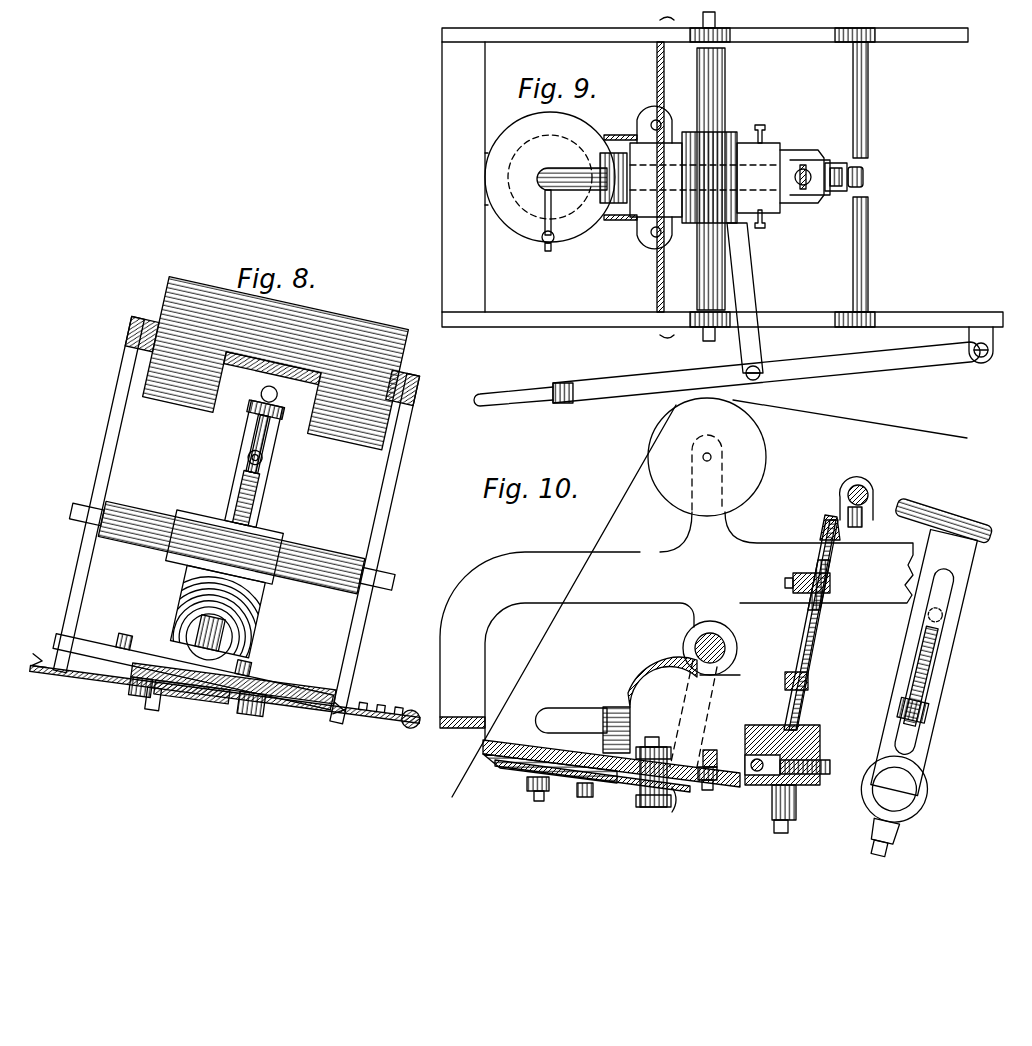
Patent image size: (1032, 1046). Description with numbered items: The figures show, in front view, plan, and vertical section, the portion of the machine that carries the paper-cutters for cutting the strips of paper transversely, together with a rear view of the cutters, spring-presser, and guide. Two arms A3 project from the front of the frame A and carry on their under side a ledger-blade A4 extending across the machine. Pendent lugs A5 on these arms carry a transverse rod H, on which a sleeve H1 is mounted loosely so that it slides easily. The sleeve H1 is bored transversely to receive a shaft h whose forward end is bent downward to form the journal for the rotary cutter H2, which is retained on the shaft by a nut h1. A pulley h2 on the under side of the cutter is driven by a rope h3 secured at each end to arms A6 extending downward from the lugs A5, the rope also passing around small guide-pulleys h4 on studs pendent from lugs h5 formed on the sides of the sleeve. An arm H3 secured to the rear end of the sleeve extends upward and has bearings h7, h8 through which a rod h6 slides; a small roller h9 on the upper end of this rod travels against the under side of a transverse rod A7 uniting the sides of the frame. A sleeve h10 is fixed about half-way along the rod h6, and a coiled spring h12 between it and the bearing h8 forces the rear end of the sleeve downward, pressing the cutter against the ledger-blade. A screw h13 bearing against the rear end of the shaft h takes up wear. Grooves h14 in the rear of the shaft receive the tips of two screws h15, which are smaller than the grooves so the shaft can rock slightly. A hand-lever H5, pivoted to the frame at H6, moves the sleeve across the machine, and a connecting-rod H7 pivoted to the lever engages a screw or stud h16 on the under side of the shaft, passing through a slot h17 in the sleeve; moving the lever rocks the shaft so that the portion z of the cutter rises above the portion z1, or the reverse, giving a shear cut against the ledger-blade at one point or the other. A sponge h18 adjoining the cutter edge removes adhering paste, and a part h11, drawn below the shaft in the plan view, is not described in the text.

In FIG. 9, the frame A is at (722, 176).
In FIG. 10, the arms A3 is at (676, 626).
In FIG. 8, the ledger-blade A4 is at (233, 522).
In FIG. 9, the ledger-blade A4 is at (463, 177).
In FIG. 10, the ledger-blade A4 is at (462, 713).
In FIG. 10, the pendent lugs A5 is at (710, 639).
In FIG. 10, the arms A6 is at (684, 808).
In FIG. 8, the transverse rod A7 is at (276, 363).
In FIG. 9, the transverse rod A7 is at (868, 250).
In FIG. 10, the transverse rod A7 is at (868, 486).
In FIG. 8, the transverse rod H is at (305, 540).
In FIG. 9, the transverse rod H is at (711, 179).
In FIG. 10, the transverse rod H is at (695, 650).
In FIG. 8, the sleeve H1 is at (215, 609).
In FIG. 9, the sleeve H1 is at (735, 132).
In FIG. 10, the sleeve H1 is at (684, 712).
In FIG. 8, the rotary cutter H2 is at (128, 685).
In FIG. 9, the rotary cutter H2 is at (550, 177).
In FIG. 10, the rotary cutter H2 is at (611, 756).
In FIG. 8, the arm H3 is at (258, 497).
In FIG. 10, the arm H3 is at (794, 715).
In FIG. 8, the hand-lever H5 is at (418, 728).
In FIG. 9, the hand-lever H5 is at (727, 373).
In FIG. 9, the pivot H6 is at (992, 345).
In FIG. 9, the connecting-rod H7 is at (750, 298).
In FIG. 8, the shaft h is at (209, 636).
In FIG. 9, the shaft h is at (582, 178).
In FIG. 10, the shaft h is at (575, 712).
In FIG. 8, the nut h1 is at (180, 710).
In FIG. 10, the nut h1 is at (541, 800).
In FIG. 8, the pulley h2 is at (218, 712).
In FIG. 10, the pulley h2 is at (585, 798).
In FIG. 8, the rope h3 is at (300, 720).
In FIG. 9, the rope h3 is at (657, 298).
In FIG. 10, the rope h3 is at (622, 793).
In FIG. 8, the guide-pulleys h4 is at (262, 716).
In FIG. 9, the guide-pulleys h4 is at (654, 236).
In FIG. 10, the guide-pulleys h4 is at (655, 810).
In FIG. 8, the lugs h5 is at (143, 640).
In FIG. 9, the lugs h5 is at (664, 122).
In FIG. 10, the lugs h5 is at (656, 736).
In FIG. 8, the rod h6 is at (250, 447).
In FIG. 9, the rod h6 is at (838, 163).
In FIG. 10, the rod h6 is at (810, 630).
In FIG. 8, the bearing h7 is at (274, 413).
In FIG. 10, the bearing h7 is at (838, 540).
In FIG. 10, the bearing h8 is at (808, 682).
In FIG. 8, the small roller h9 is at (278, 392).
In FIG. 9, the small roller h9 is at (864, 175).
In FIG. 10, the small roller h9 is at (862, 518).
In FIG. 8, the sleeve h10 is at (262, 465).
In FIG. 10, the sleeve h10 is at (821, 583).
In FIG. 9, the pin h11 is at (563, 212).
In FIG. 8, the coiled spring h12 is at (236, 495).
In FIG. 10, the coiled spring h12 is at (806, 620).
In FIG. 10, the screw h13 is at (796, 755).
In FIG. 9, the longitudinal slots or grooves h14 is at (798, 158).
In FIG. 10, the longitudinal slots or grooves h14 is at (771, 800).
In FIG. 9, the screws h15 is at (767, 126).
In FIG. 10, the screw or stud h16 is at (710, 790).
In FIG. 10, the slot h17 is at (722, 758).
In FIG. 9, the sponge h18 is at (548, 244).
In FIG. 9, the portion of the revolving cutter z is at (492, 151).
In FIG. 9, the portion of the revolving cutter z1 is at (493, 205).